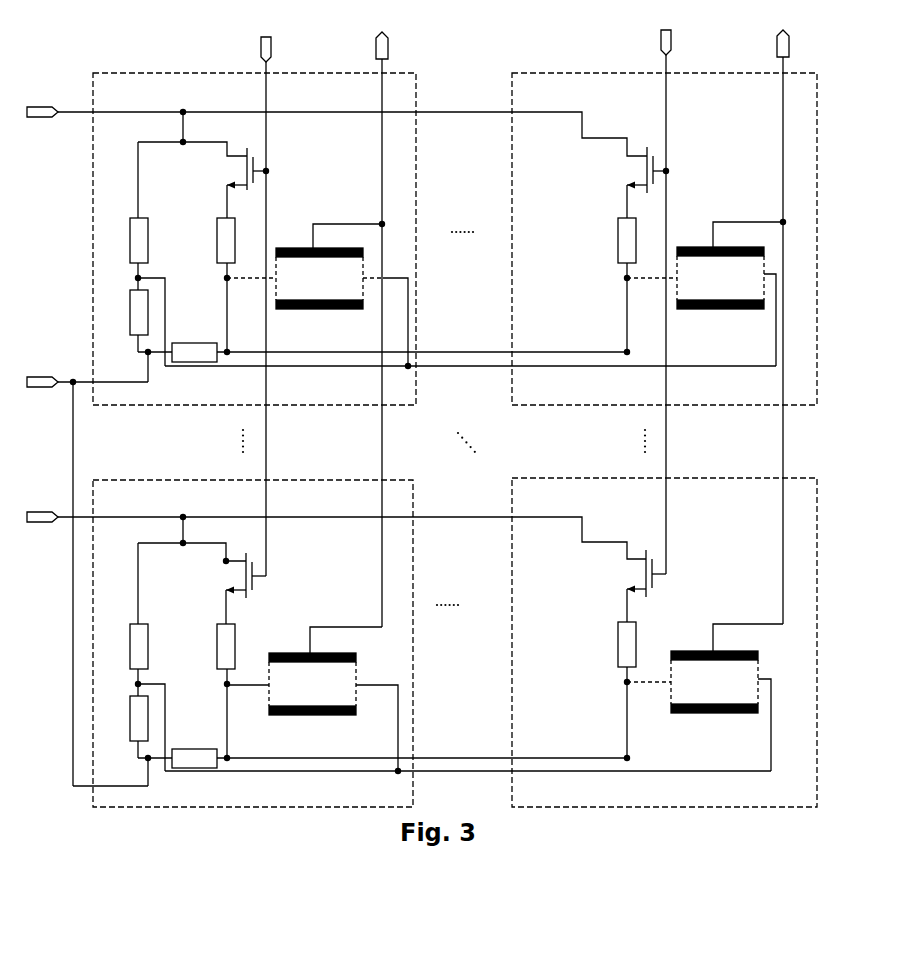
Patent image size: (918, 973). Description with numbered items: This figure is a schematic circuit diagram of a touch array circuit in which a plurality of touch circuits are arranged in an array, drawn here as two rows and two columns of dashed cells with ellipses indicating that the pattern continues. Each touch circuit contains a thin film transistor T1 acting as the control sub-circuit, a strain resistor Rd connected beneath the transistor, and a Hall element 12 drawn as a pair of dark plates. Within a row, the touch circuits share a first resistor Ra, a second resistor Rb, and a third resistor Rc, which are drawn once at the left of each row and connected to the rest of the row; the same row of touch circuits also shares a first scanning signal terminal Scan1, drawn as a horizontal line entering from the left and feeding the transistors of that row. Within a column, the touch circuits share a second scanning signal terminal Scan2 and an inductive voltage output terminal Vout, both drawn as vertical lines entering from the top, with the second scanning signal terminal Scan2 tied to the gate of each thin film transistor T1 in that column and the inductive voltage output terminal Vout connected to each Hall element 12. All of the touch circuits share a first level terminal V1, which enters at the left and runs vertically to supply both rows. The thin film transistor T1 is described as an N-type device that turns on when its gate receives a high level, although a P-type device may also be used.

The Hall element 12 is at (327, 248).
The thin film transistor T1 is at (447, 385).
The first resistor Ra is at (124, 419).
The second resistor Rb is at (136, 538).
The third resistor Rc is at (399, 546).
The strain resistor Rd is at (420, 489).
The first scanning signal terminal Scan1 is at (337, 326).
The second scanning signal terminal Scan2 is at (487, 303).
The inductive voltage output terminal Vout is at (565, 341).
The first level terminal V1 is at (87, 572).